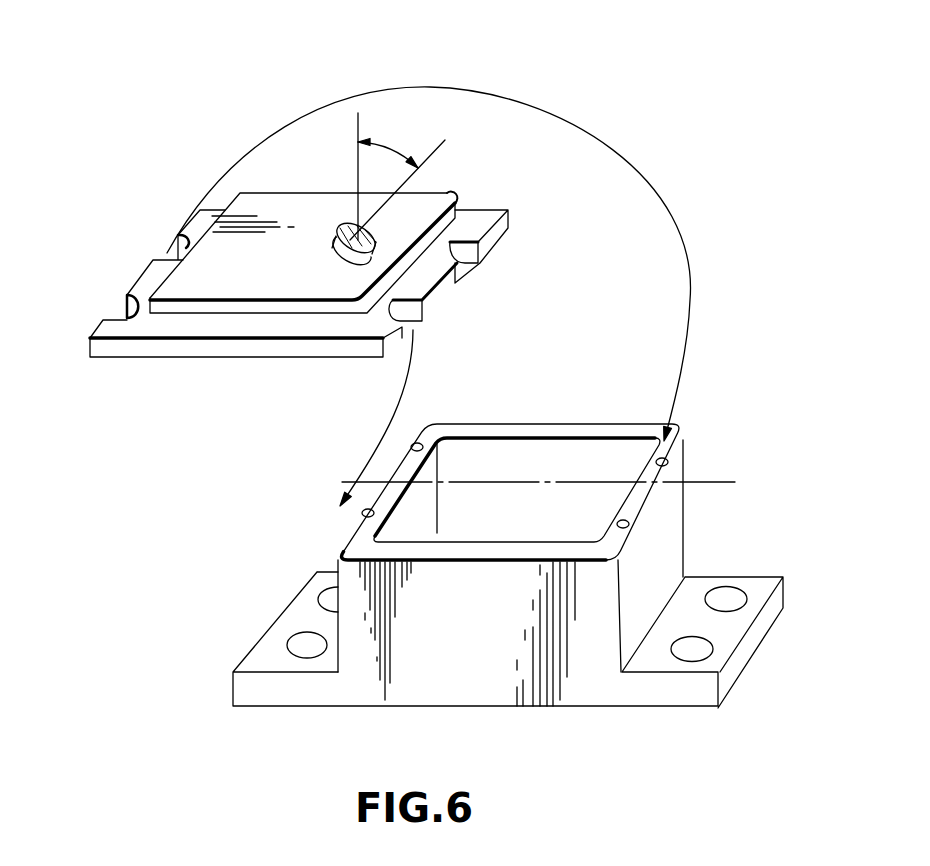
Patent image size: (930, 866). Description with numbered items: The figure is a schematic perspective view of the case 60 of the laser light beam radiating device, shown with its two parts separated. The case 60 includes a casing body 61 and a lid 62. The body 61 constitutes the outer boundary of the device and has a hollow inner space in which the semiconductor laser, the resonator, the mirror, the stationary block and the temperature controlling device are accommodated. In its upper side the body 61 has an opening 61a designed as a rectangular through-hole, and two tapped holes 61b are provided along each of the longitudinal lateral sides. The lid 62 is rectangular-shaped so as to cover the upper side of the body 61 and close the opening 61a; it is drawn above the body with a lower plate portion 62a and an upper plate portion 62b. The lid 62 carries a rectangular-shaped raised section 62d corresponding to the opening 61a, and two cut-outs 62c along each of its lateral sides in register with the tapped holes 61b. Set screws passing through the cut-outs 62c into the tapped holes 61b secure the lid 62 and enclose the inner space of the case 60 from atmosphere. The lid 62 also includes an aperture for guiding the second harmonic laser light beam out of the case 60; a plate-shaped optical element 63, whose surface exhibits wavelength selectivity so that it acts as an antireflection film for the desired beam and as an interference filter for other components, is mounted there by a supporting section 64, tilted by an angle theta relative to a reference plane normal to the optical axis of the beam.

The case 60 is at (508, 78).
The casing body 61 is at (674, 530).
The opening 61a is at (619, 457).
The tapped holes 61b is at (420, 442).
The lid 62 is at (160, 346).
The lower plate 62a is at (288, 358).
The raised plate 62b is at (173, 287).
The cut-outs 62c is at (168, 247).
The raised section 62d is at (450, 197).
The optical element 63 is at (373, 258).
The supporting section 64 is at (334, 257).